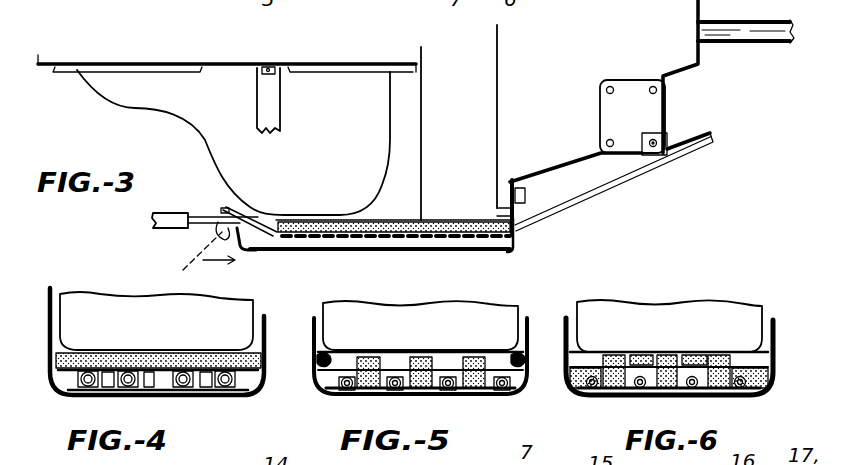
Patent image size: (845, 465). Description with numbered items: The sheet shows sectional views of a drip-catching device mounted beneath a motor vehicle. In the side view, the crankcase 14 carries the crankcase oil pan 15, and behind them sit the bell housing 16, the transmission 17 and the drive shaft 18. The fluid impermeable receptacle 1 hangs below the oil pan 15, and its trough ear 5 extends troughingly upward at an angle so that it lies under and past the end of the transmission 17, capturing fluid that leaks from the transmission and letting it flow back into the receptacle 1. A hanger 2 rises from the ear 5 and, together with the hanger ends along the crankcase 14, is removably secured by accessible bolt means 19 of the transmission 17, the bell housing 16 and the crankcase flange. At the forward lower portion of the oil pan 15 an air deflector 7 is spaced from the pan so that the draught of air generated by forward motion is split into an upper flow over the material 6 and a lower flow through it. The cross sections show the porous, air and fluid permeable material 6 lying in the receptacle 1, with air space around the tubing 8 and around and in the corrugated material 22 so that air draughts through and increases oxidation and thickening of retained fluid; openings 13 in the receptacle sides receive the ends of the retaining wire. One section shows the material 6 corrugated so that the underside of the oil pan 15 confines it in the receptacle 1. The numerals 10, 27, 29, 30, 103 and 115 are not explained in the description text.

In FIG. 3, the receptacle 1 is at (515, 245).
In FIG. 4, the receptacle 1 is at (264, 385).
In FIG. 6, the receptacle 1 is at (773, 370).
In FIG. 3, the hanger 2 is at (258, 90).
In FIG. 4, the hanger 2 is at (47, 301).
In FIG. 6, the hanger 2 is at (773, 321).
In FIG. 3, the trough ear 5 is at (700, 146).
In FIG. 3, the material 6 is at (371, 221).
In FIG. 4, the material 6 is at (64, 376).
In FIG. 5, the material 6 is at (328, 385).
In FIG. 6, the material 6 is at (754, 348).
In FIG. 3, the air deflector 7 is at (231, 208).
In FIG. 3, the tubing 8 is at (203, 226).
In FIG. 4, the tubing 8 is at (192, 387).
In FIG. 5, the tubing 8 is at (469, 391).
In FIG. 6, the tubing 8 is at (702, 394).
In FIG. 3, the rod 10 is at (160, 229).
In FIG. 3, the openings 13 is at (194, 262).
In FIG. 3, the crankcase 14 is at (133, 90).
In FIG. 3, the crankcase oil pan 15 is at (350, 182).
In FIG. 4, the crankcase oil pan 15 is at (173, 332).
In FIG. 5, the crankcase oil pan 15 is at (420, 333).
In FIG. 6, the crankcase oil pan 15 is at (657, 335).
In FIG. 3, the bell housing 16 is at (476, 105).
In FIG. 3, the transmission 17 is at (643, 53).
In FIG. 3, the drive shaft 18 is at (745, 28).
In FIG. 3, the bolt means 19 is at (273, 74).
In FIG. 3, the corrugated material 22 is at (512, 241).
In FIG. 4, the corrugated material 22 is at (149, 391).
In FIG. 5, the side wall 27 is at (313, 342).
In FIG. 5, the ledge 29 is at (313, 361).
In FIG. 5, the gripper 30 is at (328, 357).
In FIG. 5, the trough 103 is at (529, 385).
In FIG. 5, the block 115 is at (388, 352).